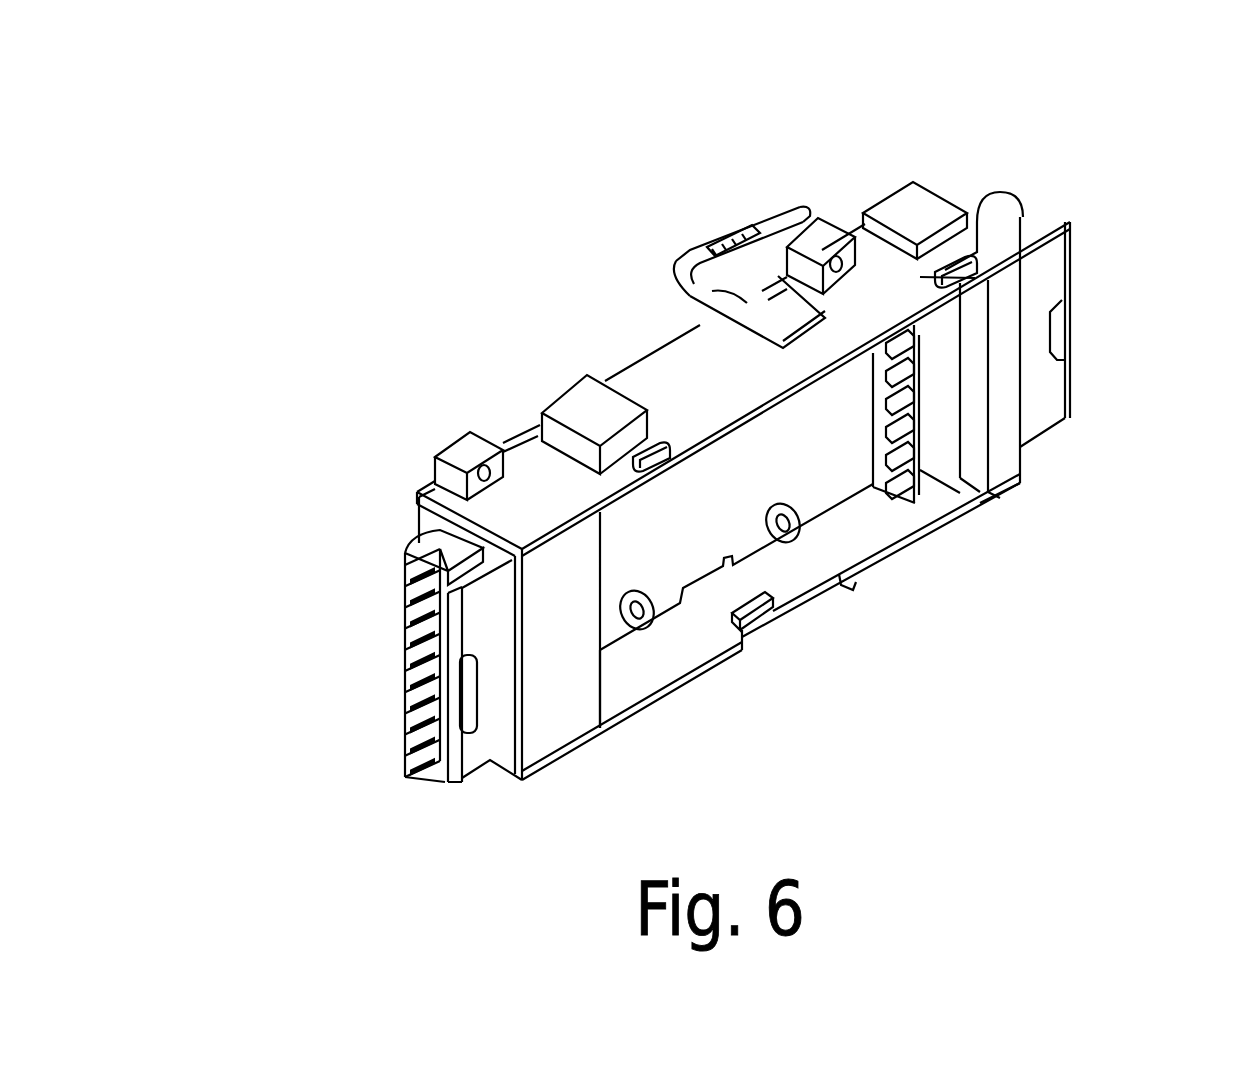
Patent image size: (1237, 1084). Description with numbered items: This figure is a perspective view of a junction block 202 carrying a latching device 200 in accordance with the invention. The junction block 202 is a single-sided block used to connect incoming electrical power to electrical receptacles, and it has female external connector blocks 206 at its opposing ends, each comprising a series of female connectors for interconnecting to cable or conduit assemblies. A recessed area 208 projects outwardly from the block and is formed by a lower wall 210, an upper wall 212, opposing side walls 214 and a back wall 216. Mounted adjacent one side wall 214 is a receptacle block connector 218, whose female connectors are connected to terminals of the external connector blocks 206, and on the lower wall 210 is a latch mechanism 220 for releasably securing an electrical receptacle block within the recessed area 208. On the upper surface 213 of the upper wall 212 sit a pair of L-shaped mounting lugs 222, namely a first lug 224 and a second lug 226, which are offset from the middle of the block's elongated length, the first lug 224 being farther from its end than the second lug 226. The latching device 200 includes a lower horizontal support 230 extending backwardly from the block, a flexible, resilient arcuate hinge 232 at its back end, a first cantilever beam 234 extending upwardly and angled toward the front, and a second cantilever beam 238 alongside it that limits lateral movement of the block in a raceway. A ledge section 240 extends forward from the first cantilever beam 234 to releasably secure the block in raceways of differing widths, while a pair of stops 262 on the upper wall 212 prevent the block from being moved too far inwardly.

The latching device 200 is at (761, 190).
The junction block 202 is at (1020, 176).
The female external connector blocks 206 is at (381, 679).
The recessed area 208 is at (822, 482).
The lower wall 210 is at (663, 665).
The upper wall 212 is at (915, 375).
The upper surface 213 is at (796, 389).
The side walls 214 is at (606, 572).
The back wall 216 is at (807, 410).
The receptacle block connector 218 is at (990, 503).
The latch mechanism 220 is at (776, 631).
The L-shaped mounting lugs 222 is at (573, 380).
The first lug 224 is at (570, 398).
The second lug 226 is at (940, 186).
The lower horizontal support 230 is at (700, 308).
The hinge 232 is at (673, 267).
The first cantilever beam 234 is at (710, 232).
The second cantilever beam 238 is at (807, 203).
The ledge section 240 is at (705, 243).
The stops 262 is at (668, 462).